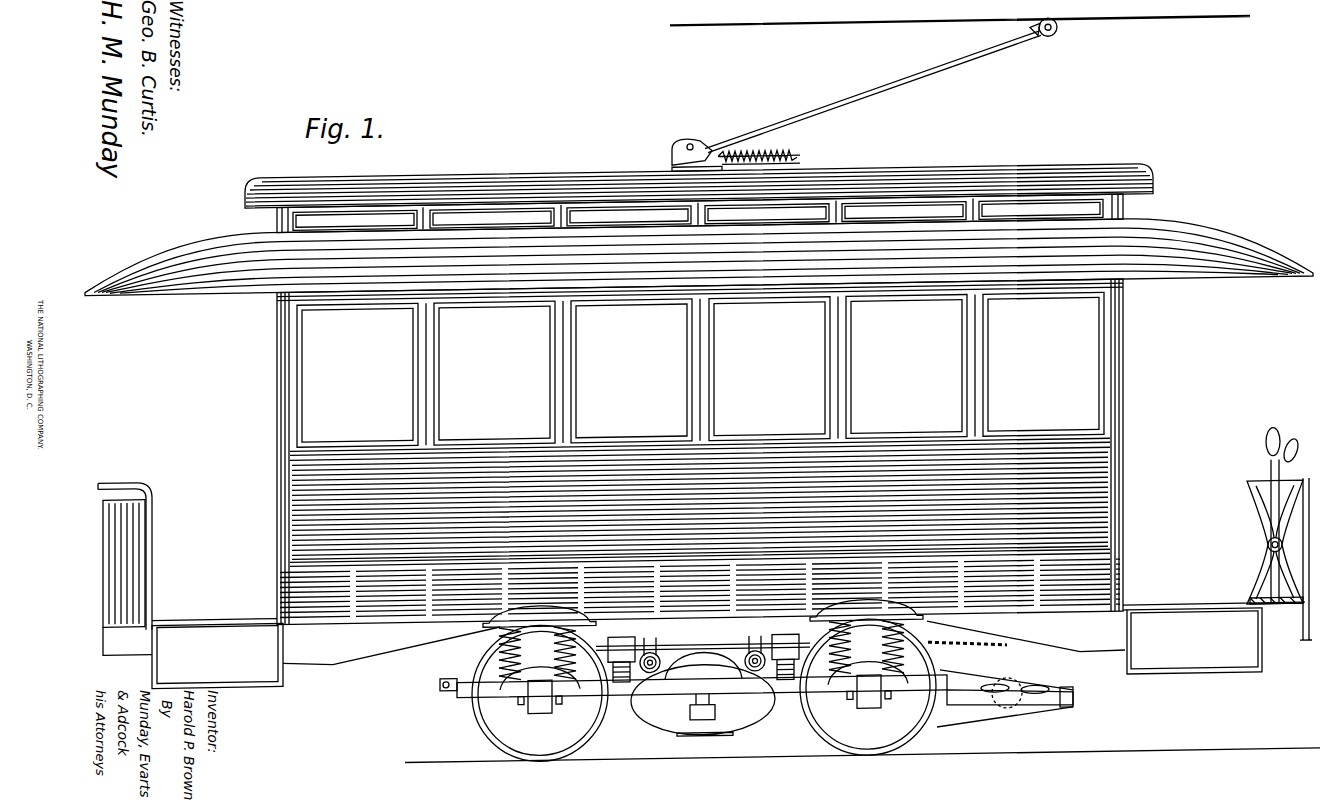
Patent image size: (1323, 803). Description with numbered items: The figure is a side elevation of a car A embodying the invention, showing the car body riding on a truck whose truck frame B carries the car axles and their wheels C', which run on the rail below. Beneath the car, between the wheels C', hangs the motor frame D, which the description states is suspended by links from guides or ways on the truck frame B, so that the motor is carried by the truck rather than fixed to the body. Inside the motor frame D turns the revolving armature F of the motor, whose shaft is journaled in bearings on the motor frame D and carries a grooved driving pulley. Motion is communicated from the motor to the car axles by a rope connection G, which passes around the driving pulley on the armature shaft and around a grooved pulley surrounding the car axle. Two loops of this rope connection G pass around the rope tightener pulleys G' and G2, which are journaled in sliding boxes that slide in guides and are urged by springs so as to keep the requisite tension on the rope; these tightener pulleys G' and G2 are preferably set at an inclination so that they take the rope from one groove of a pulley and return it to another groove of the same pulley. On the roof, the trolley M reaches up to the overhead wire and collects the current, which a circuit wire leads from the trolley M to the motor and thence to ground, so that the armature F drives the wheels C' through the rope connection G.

The car A is at (699, 394).
The truck frame B is at (693, 656).
The wheels C' is at (704, 690).
The motor frame D is at (696, 714).
The revolving armature of the motor F is at (703, 685).
The rope connection G is at (1000, 683).
The rope tightener pulley G' is at (1001, 672).
The rope tightener pulley G2 is at (1033, 706).
The trolley M is at (1048, 53).